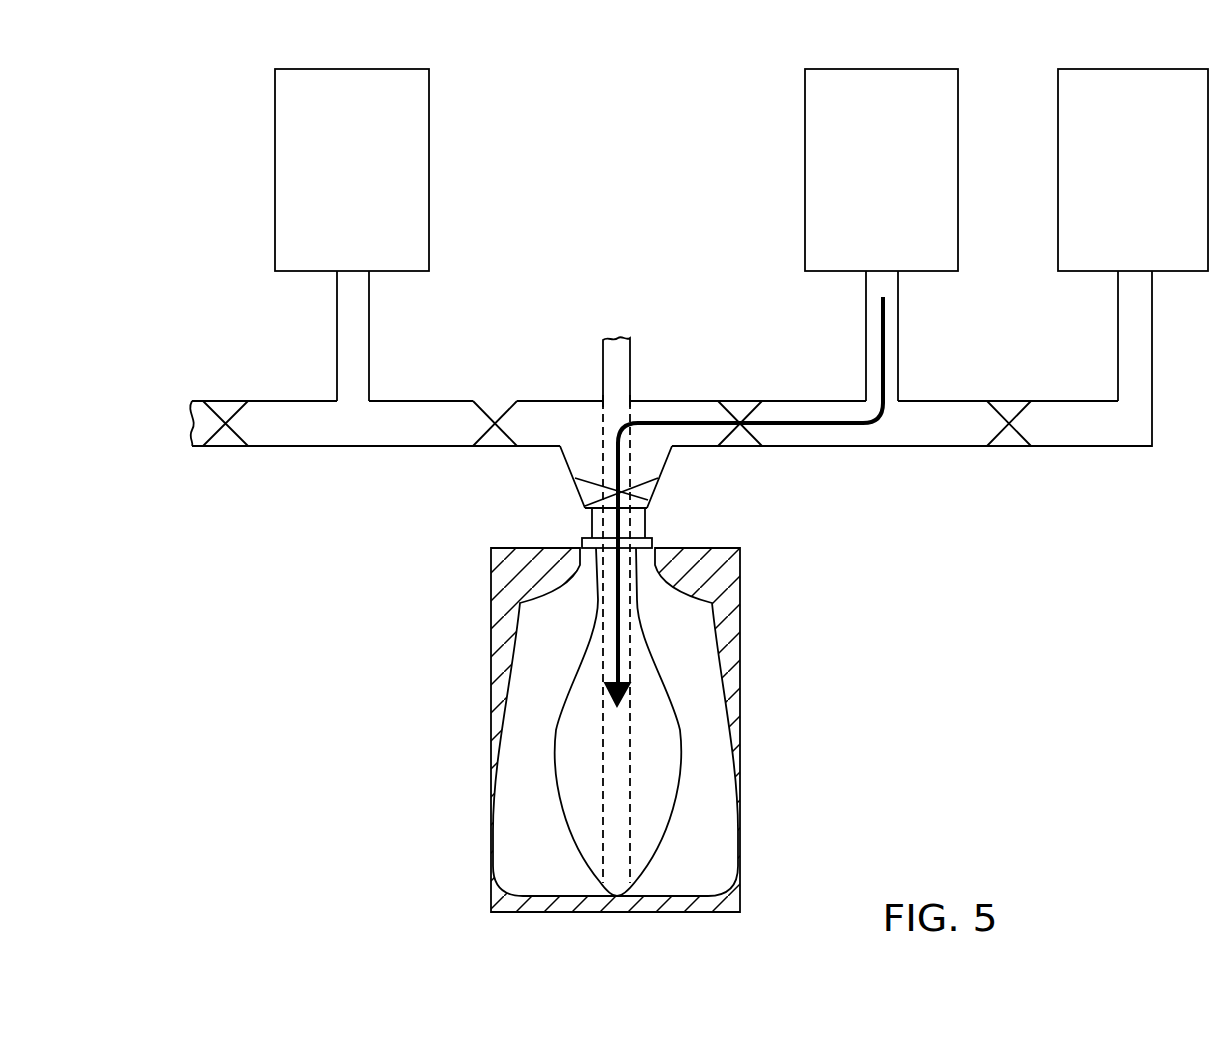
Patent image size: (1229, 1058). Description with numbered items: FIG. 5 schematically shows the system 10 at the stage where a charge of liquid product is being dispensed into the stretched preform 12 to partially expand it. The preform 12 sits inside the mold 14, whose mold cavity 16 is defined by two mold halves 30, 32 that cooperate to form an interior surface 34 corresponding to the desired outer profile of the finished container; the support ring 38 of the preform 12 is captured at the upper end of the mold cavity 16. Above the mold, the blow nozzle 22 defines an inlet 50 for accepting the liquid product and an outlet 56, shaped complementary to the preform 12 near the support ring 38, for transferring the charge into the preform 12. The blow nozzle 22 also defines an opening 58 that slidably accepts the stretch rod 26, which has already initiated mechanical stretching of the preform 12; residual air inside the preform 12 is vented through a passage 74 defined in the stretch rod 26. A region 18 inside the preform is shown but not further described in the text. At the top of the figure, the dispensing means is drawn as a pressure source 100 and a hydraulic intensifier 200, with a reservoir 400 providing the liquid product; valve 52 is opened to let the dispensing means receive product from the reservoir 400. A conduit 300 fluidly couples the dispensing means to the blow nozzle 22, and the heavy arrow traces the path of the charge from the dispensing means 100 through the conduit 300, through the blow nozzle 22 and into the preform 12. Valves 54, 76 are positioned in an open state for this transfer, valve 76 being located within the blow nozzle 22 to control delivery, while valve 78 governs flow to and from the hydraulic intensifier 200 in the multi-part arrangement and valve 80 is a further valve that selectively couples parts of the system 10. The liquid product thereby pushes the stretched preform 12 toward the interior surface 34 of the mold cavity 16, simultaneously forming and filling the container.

The system 10 is at (556, 730).
The preform 12 is at (653, 648).
The mold 14 is at (527, 507).
The mold cavity 16 is at (700, 682).
The container interior 18 is at (650, 747).
The blow nozzle 22 is at (577, 480).
The stretch rod 26 is at (600, 340).
The mold half 30 is at (493, 903).
The mold half 32 is at (742, 900).
The interior surface 34 is at (498, 750).
The support ring 38 is at (580, 540).
The inlet 50 is at (552, 447).
The valve 52 is at (1012, 444).
The valve 54 is at (742, 442).
The outlet 56 is at (590, 507).
The opening 58 is at (601, 398).
The passage 74 is at (632, 370).
The valve 76 is at (650, 498).
The valve 78 is at (492, 407).
The valve 80 is at (223, 440).
The dispensing means 100 is at (881, 235).
The hydraulic intensifier 200 is at (352, 235).
The conduit 300 is at (805, 398).
The reservoir 400 is at (1133, 235).